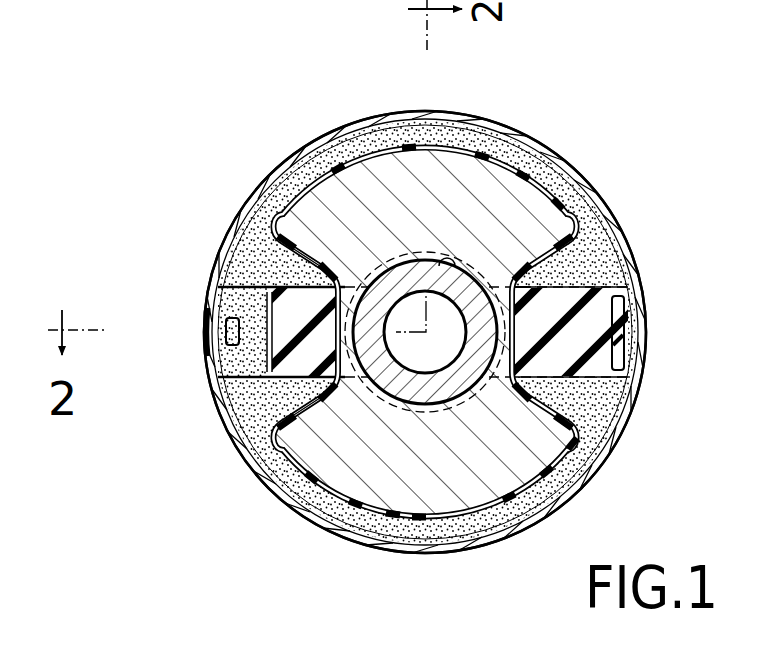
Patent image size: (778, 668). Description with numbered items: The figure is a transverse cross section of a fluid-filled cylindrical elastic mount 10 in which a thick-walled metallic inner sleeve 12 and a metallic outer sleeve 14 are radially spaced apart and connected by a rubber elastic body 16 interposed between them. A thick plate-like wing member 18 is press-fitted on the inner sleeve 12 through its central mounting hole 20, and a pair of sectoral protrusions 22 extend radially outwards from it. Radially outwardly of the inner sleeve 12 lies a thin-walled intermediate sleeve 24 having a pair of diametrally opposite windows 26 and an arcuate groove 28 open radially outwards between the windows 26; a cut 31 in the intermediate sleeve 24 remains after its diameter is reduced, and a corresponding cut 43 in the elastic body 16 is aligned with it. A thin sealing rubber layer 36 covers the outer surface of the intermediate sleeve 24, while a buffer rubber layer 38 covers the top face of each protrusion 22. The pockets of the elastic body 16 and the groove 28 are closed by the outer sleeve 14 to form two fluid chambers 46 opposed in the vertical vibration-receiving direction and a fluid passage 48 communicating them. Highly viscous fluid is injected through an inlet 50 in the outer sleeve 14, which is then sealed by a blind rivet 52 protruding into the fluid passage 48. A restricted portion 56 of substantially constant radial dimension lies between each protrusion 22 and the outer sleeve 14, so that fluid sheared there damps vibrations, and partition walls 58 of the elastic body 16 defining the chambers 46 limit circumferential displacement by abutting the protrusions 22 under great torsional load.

The cylindrical elastic mount 10 is at (562, 84).
The inner sleeve 12 is at (410, 392).
The outer sleeve 14 is at (628, 262).
The elastic body 16 is at (600, 437).
The wing member 18 is at (298, 508).
The mounting hole 20 is at (438, 263).
The sectoral protrusions 22 is at (400, 170).
The intermediate sleeve 24 is at (280, 388).
The windows 26 is at (296, 310).
The arcuate groove 28 is at (262, 312).
The cut 31 is at (627, 285).
The sealing rubber layer 36 is at (632, 345).
The buffer rubber layer 38 is at (362, 155).
The cut 43 is at (628, 318).
The fluid chambers 46 is at (592, 245).
The fluid passage 48 is at (268, 360).
The inlet 50 is at (230, 333).
The blind rivet 52 is at (212, 348).
The restricted portion 56 is at (442, 128).
The partition walls 58 is at (255, 240).